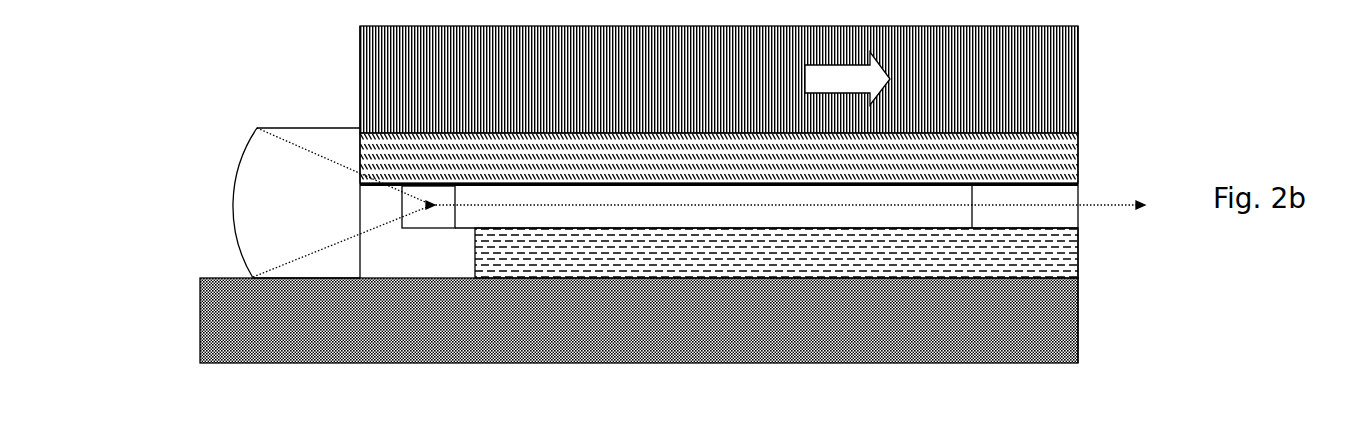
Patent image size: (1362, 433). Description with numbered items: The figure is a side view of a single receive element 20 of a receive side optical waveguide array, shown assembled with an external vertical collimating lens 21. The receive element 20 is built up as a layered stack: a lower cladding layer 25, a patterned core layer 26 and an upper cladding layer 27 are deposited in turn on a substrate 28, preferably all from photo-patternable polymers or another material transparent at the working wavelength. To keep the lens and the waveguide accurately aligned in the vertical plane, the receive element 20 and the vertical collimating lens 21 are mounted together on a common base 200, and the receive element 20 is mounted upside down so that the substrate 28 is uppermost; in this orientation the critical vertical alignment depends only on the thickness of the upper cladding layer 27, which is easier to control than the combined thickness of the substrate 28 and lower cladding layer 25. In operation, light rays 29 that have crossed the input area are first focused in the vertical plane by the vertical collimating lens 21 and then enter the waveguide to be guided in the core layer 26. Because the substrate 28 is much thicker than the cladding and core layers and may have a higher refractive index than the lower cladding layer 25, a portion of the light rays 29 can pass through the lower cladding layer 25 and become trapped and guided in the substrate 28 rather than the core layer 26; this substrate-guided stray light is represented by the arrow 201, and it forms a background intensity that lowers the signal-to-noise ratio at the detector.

The receive element 20 is at (1143, 92).
The vertical collimating lens 21 is at (279, 120).
The lower cladding layer 25 is at (1083, 157).
The patterned core layer 26 is at (1080, 193).
The upper cladding layer 27 is at (1080, 258).
The substrate 28 is at (1080, 61).
The light rays 29 is at (257, 130).
The common base 200 is at (1080, 320).
The arrow 201 is at (876, 78).